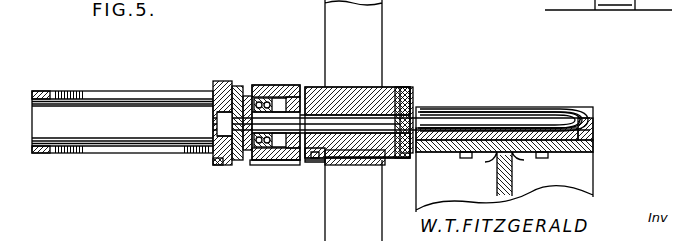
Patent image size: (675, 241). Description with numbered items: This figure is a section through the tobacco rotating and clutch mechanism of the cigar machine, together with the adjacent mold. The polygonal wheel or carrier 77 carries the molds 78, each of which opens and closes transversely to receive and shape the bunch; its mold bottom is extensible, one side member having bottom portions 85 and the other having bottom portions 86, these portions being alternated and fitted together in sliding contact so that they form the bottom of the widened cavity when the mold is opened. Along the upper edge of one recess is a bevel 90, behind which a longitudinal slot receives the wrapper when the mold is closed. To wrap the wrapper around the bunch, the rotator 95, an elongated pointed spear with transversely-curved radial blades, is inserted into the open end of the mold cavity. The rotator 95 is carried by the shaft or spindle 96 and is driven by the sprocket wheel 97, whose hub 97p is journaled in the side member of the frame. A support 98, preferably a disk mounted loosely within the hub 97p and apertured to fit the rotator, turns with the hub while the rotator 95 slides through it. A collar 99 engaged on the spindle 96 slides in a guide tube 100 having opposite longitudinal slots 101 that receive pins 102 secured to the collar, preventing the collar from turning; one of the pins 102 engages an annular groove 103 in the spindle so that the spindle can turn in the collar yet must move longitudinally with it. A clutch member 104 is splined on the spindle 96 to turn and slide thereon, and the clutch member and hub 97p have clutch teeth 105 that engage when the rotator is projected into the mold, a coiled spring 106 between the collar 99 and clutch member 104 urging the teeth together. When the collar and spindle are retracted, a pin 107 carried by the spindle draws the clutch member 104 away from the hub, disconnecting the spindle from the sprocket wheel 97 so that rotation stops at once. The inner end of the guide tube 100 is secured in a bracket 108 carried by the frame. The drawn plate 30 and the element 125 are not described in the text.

The wall plate 30 is at (325, 22).
The polygonal wheel or carrier 77 is at (594, 150).
The mold 78 is at (555, 100).
The bottom portions 85 is at (499, 170).
The bottom portions 86 is at (594, 130).
The bevel 90 is at (483, 109).
The rotator 95 is at (506, 125).
The shaft or spindle 96 is at (350, 88).
The sprocket wheel 97 is at (312, 162).
The hub 97p is at (384, 88).
The support 98 is at (411, 89).
The collar 99 is at (197, 154).
The guide tube 100 is at (43, 154).
The longitudinal slots 101 is at (126, 92).
The pins 102 is at (224, 81).
The annular groove 103 is at (213, 125).
The clutch member 104 is at (276, 85).
The clutch teeth 105 is at (285, 165).
The coiled spring 106 is at (262, 97).
The pin 107 is at (330, 165).
The bracket 108 is at (300, 86).
The spacer 125 is at (215, 163).